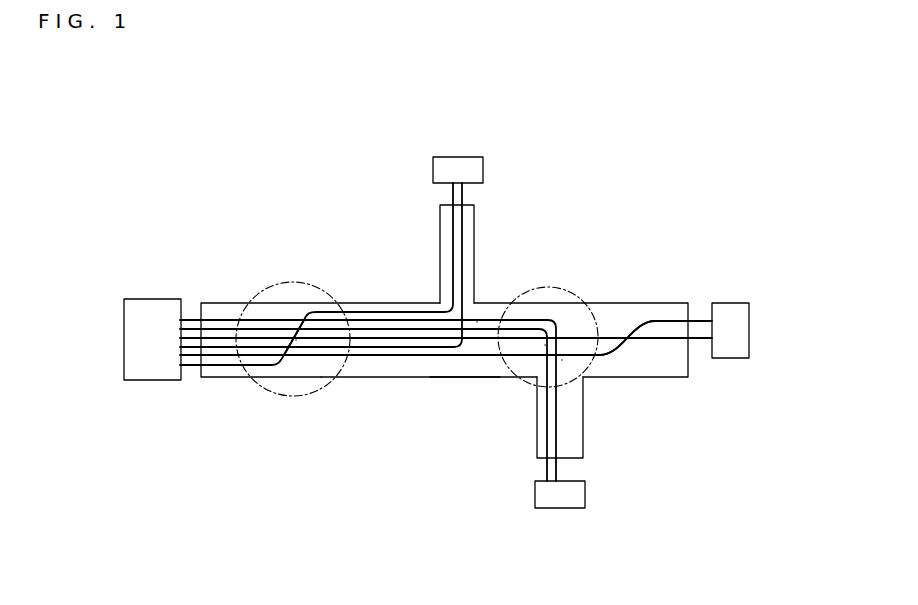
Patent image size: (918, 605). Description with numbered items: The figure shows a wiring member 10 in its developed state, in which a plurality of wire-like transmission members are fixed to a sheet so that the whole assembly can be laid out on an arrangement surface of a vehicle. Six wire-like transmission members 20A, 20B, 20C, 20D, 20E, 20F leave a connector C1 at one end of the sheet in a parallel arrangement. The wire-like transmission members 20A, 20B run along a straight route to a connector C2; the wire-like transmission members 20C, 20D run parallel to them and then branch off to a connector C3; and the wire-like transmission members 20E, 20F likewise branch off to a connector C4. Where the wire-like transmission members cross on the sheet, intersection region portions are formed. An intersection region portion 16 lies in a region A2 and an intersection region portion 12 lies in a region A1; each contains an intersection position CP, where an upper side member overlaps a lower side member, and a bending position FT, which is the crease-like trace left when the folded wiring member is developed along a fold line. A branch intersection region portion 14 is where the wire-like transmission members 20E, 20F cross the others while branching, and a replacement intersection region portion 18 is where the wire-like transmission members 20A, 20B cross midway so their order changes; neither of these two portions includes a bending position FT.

The wiring member 10 is at (191, 152).
The intersection region portion 12 is at (565, 323).
The branch intersection region portion 14 is at (462, 377).
The intersection region portion 16 is at (286, 363).
The replacement intersection region portion 18 is at (632, 328).
The wire-like transmission member 20A is at (675, 321).
The wire-like transmission member 20B is at (670, 340).
The wire-like transmission member 20C is at (557, 433).
The wire-like transmission member 20D is at (547, 443).
The wire-like transmission member 20E is at (474, 212).
The wire-like transmission member 20F is at (441, 212).
The connector C1 is at (152, 372).
The connector C2 is at (728, 352).
The connector C3 is at (558, 498).
The connector C4 is at (457, 167).
The region A1 is at (558, 287).
The region A2 is at (287, 282).
The intersection position CP is at (296, 340).
The bending position FT is at (321, 377).